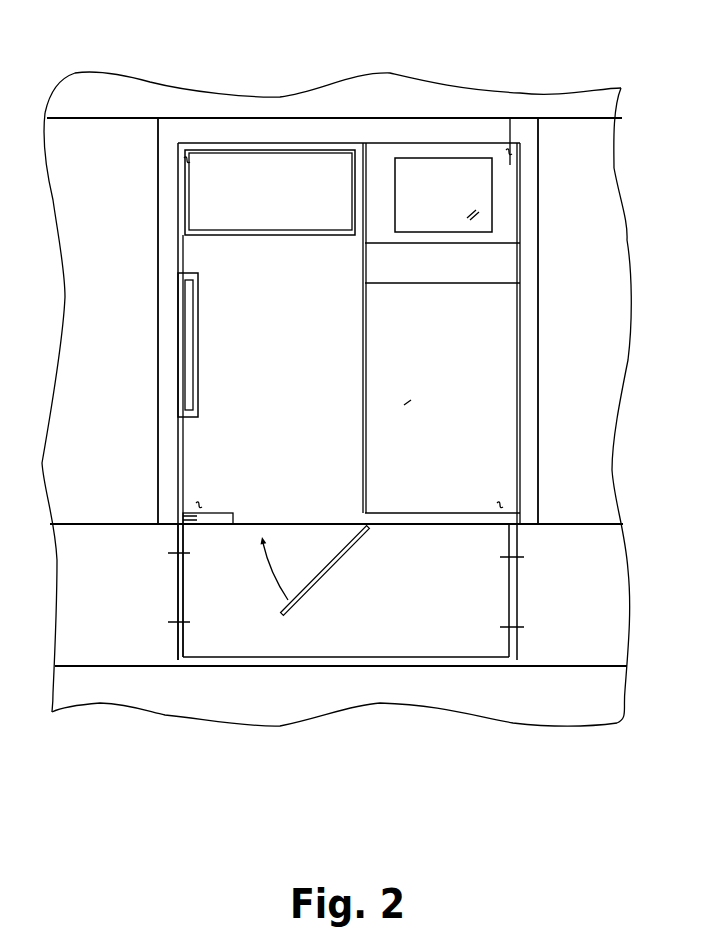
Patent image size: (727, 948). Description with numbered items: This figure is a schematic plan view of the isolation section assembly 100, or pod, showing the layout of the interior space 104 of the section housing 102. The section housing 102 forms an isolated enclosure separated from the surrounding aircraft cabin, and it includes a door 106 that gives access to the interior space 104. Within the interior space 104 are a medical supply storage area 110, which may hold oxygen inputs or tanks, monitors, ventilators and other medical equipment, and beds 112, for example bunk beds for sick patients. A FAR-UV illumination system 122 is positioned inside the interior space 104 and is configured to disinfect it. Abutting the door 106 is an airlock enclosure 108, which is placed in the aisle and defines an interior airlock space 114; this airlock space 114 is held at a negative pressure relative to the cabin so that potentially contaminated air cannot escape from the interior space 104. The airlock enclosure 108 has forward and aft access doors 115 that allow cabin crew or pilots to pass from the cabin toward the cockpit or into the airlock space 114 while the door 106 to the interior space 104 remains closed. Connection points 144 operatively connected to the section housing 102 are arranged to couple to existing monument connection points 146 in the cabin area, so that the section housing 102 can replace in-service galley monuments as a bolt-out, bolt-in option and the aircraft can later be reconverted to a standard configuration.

The isolation section assembly 100 is at (76, 96).
The section housing 102 is at (157, 310).
The interior space 104 is at (214, 441).
The door 106 is at (338, 566).
The airlock enclosure 108 is at (227, 667).
The medical supply storage area 110 is at (311, 163).
The beds 112 is at (441, 328).
The interior airlock space 114 is at (439, 623).
The forward and aft access doors 115 is at (175, 585).
The FAR-UV illumination system 122 is at (187, 272).
The connection points 144 is at (182, 150).
The monument connection points 146 is at (512, 106).